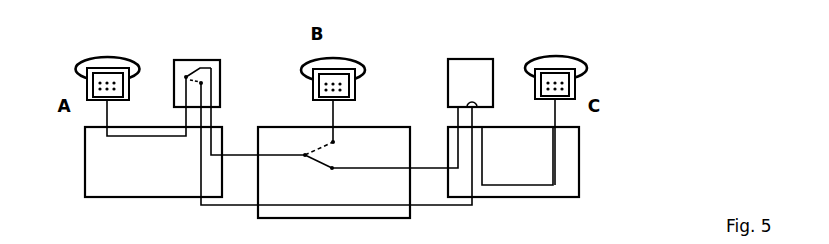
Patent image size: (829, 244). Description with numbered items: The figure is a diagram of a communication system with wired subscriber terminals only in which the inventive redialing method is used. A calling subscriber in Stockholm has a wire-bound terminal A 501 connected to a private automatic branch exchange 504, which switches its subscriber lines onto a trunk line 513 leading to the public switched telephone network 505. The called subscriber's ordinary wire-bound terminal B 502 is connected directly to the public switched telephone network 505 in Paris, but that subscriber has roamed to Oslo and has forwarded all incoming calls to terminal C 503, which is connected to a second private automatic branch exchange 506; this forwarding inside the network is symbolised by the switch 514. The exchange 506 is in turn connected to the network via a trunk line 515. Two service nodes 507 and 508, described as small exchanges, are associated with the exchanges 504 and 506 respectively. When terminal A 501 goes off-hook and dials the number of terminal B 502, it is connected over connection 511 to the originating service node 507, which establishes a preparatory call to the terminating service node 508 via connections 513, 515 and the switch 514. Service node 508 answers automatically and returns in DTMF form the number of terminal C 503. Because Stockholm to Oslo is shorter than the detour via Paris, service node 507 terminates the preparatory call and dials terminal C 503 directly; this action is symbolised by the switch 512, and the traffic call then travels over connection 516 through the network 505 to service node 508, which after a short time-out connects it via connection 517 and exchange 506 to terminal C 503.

The terminal A 501 is at (112, 57).
The terminal B 502 is at (328, 57).
The terminal C 503 is at (558, 57).
The private automatic branch exchange 504 is at (85, 168).
The public switched telephone network 505 is at (332, 220).
The private automatic branch exchange 506 is at (580, 167).
The service node 507 is at (197, 60).
The service node 508 is at (473, 58).
The connection 511 is at (148, 140).
The switch 512 is at (213, 69).
The trunk line 513 is at (233, 153).
The switch 514 is at (332, 155).
The trunk line 515 is at (436, 167).
The connection 516 is at (230, 206).
The connection 517 is at (508, 186).